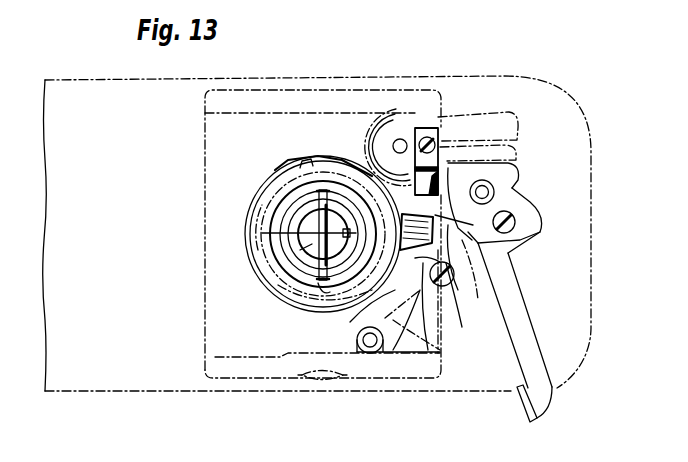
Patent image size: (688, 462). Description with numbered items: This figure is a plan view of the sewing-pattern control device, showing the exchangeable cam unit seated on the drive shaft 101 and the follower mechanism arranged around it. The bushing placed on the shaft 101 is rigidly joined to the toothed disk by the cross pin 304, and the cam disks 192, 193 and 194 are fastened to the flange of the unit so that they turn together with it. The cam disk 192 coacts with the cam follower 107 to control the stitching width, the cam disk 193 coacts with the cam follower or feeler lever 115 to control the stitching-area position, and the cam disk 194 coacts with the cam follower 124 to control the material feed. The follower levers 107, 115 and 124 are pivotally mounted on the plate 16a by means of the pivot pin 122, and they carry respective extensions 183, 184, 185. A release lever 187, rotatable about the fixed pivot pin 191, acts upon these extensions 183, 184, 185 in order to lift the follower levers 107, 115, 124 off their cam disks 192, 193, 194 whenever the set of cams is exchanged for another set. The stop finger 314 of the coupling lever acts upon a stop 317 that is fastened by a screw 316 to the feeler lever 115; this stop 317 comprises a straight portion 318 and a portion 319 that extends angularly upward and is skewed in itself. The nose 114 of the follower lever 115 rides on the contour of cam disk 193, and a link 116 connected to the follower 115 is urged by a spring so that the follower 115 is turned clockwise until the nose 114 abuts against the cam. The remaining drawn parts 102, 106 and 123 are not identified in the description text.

The plate 16a is at (312, 112).
The cam disk 192 is at (337, 158).
The cam disk 193 is at (277, 173).
The cam disk 194 is at (302, 167).
The angularly extending portion 319 is at (395, 134).
The pivot pin 122 is at (398, 138).
The stop 317 is at (416, 126).
The straight portion 318 is at (412, 127).
The screw 316 is at (437, 132).
The extension 185 is at (511, 117).
The extension 184 is at (521, 143).
The extension 183 is at (517, 170).
The fixed pivot pin 191 is at (491, 193).
The stop finger 314 is at (493, 195).
The cam follower or feeler lever 115 is at (440, 213).
The screw 123 is at (431, 279).
The release lever 187 is at (557, 388).
The cam follower 124 is at (467, 262).
The link 116 is at (462, 329).
The nose 114 is at (360, 317).
The cam follower 107 is at (360, 345).
The shaft 102 is at (262, 233).
The drive shaft 101 is at (312, 250).
The cross pin 304 is at (300, 280).
The lobe 106 is at (325, 298).